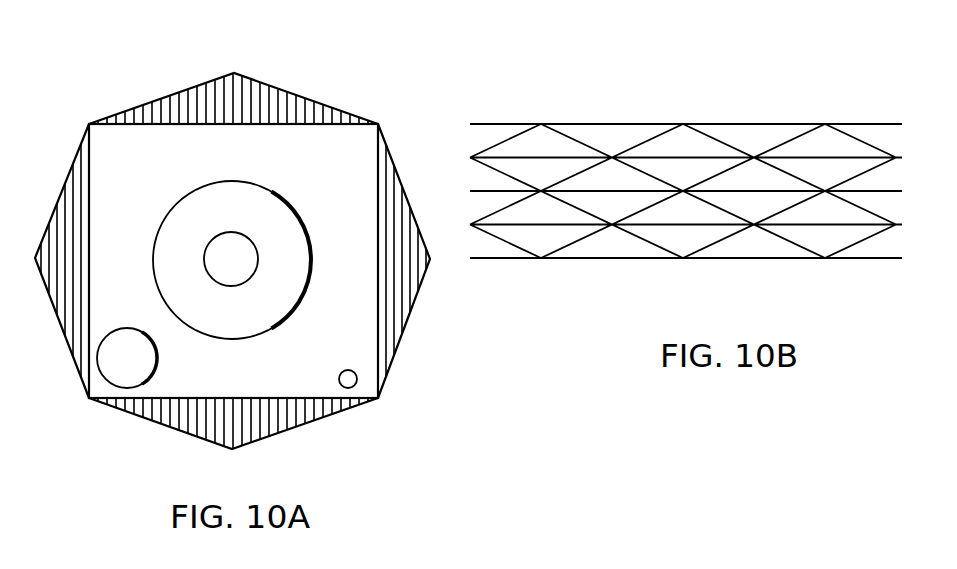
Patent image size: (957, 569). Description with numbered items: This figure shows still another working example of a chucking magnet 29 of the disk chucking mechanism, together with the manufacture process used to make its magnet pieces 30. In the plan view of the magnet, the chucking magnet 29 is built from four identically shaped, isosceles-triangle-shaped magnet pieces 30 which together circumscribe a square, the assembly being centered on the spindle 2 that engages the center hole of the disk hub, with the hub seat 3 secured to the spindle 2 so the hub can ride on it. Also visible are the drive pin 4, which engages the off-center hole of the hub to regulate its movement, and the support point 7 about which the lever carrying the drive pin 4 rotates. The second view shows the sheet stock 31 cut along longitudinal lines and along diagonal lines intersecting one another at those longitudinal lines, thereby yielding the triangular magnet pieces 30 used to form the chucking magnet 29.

In FIG. 10A, the spindle 2 is at (258, 255).
In FIG. 10A, the hub seat 3 is at (240, 198).
In FIG. 10A, the drive pin 4 is at (142, 370).
In FIG. 10A, the support point 7 is at (354, 369).
In FIG. 10A, the chucking magnet 29 is at (413, 353).
In FIG. 10A, the magnet pieces 30 is at (313, 100).
In FIG. 10B, the sheet stock 31 is at (490, 133).